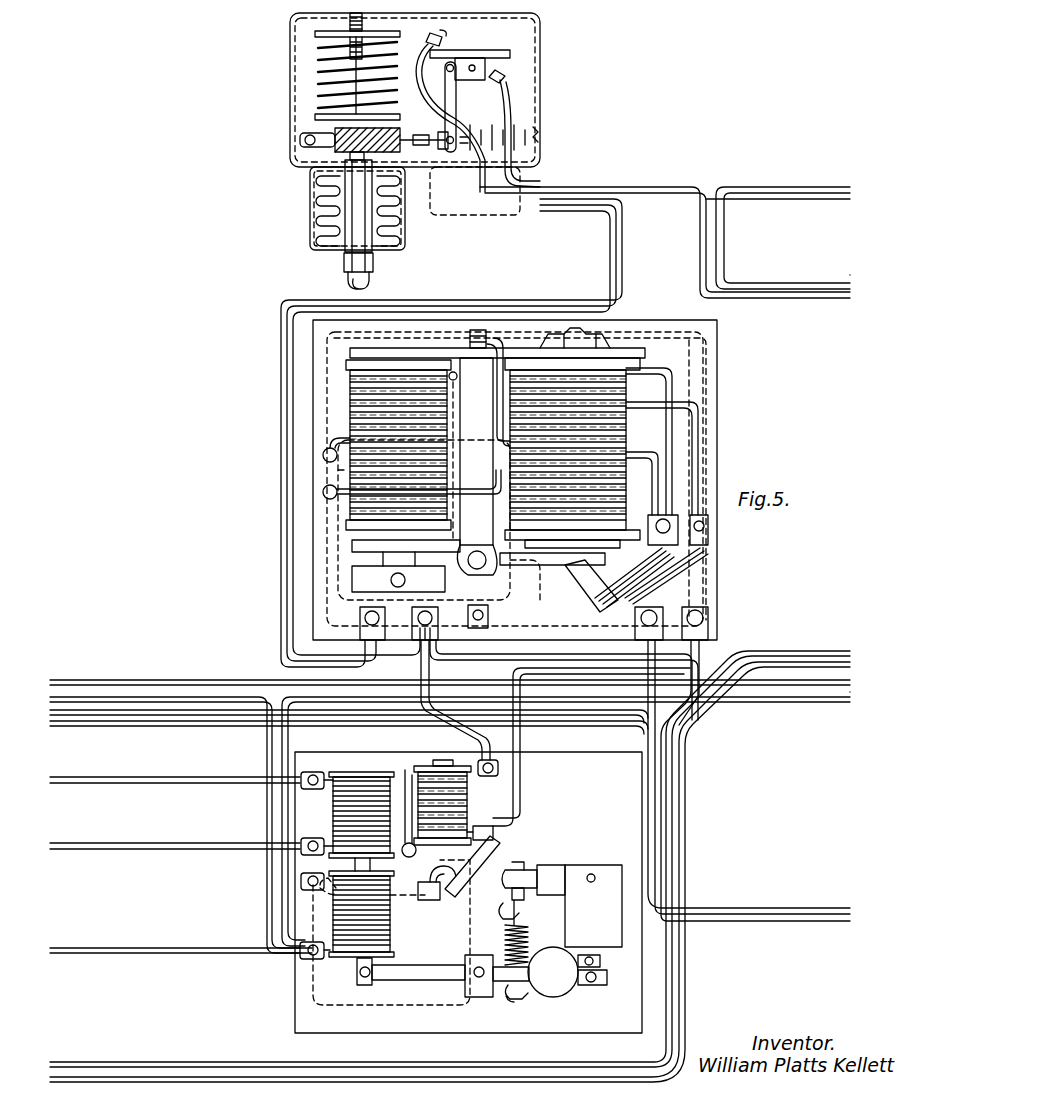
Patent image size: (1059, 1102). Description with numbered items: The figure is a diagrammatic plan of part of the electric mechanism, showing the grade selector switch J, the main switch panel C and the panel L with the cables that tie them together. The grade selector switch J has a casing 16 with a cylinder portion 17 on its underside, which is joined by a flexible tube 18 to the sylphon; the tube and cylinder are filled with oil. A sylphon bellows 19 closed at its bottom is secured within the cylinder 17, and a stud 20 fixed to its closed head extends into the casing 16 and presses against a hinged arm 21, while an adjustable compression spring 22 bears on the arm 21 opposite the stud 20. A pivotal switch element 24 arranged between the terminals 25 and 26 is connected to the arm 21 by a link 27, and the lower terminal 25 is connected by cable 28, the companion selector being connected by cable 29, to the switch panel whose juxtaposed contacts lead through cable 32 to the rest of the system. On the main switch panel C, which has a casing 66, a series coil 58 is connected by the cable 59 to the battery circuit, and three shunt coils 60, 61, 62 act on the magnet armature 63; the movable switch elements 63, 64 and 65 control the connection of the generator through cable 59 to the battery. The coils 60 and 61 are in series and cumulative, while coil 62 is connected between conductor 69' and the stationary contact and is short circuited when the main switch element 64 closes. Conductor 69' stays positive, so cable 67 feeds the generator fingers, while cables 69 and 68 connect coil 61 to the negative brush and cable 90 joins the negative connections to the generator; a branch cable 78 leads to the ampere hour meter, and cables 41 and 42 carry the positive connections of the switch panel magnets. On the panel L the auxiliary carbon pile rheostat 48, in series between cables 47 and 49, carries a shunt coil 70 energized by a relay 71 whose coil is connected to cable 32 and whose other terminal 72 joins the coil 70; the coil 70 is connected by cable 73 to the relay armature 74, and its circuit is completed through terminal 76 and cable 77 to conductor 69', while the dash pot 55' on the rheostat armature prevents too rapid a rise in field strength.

The grade selector switch J is at (548, 62).
The adjustable compression spring 22 is at (320, 80).
The hinged arm 21 is at (317, 133).
The casing 16 is at (302, 146).
The cylinder portion 17 is at (310, 186).
The sylphon bellows 19 is at (322, 206).
The stud 20 is at (352, 228).
The flexible tube 18 is at (344, 279).
The pivotal switch element 24 is at (481, 51).
The lower electric terminal 25 is at (502, 78).
The terminal 26 is at (432, 38).
The link 27 is at (445, 114).
The cable 28 is at (609, 186).
The cable 29 is at (765, 186).
The shunt coil 62 is at (352, 400).
The main switch panel C is at (718, 414).
The casing 66 is at (696, 360).
The cable 69 is at (450, 576).
The conductor 69' is at (659, 556).
The cable 67 is at (460, 426).
The shunt coil 60 is at (628, 426).
The series coil 58 is at (626, 497).
The shunt coil 61 is at (347, 472).
The cable 59 is at (478, 488).
The magnet armature 63 is at (370, 565).
The main movable switch element 64 is at (628, 578).
The movable switch element 65 is at (657, 561).
The cable 68 is at (338, 613).
The branch cable 78 is at (598, 662).
The cable 90 is at (700, 921).
The cable 42 is at (762, 657).
The cable 41 is at (781, 654).
The cable 32 is at (765, 697).
The panel L is at (655, 821).
The terminal 72 is at (468, 946).
The cable 47 is at (240, 784).
The cable 49 is at (240, 850).
The auxiliary carbon pile rheostat 48 is at (333, 812).
The shunt coil 70 is at (390, 931).
The relay 71 is at (467, 800).
The cable 77 is at (530, 800).
The terminal 76 is at (493, 833).
The armature 74 is at (472, 852).
The cable 73 is at (419, 899).
The dash pot 55' is at (489, 916).